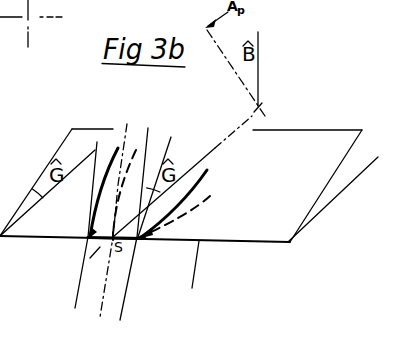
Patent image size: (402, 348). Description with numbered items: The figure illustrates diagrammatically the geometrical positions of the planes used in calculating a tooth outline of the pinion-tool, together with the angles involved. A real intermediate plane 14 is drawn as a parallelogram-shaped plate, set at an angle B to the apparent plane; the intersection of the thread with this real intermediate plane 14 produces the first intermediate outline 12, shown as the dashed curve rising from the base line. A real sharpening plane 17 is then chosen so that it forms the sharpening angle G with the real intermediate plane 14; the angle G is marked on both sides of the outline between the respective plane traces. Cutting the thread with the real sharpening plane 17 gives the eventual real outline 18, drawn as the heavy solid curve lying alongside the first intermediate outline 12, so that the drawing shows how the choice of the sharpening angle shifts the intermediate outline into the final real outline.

The first intermediate outline 12 is at (186, 218).
The real intermediate plane 14 is at (335, 189).
The real sharpening plane 17 is at (323, 150).
The eventual real outline 18 is at (195, 192).